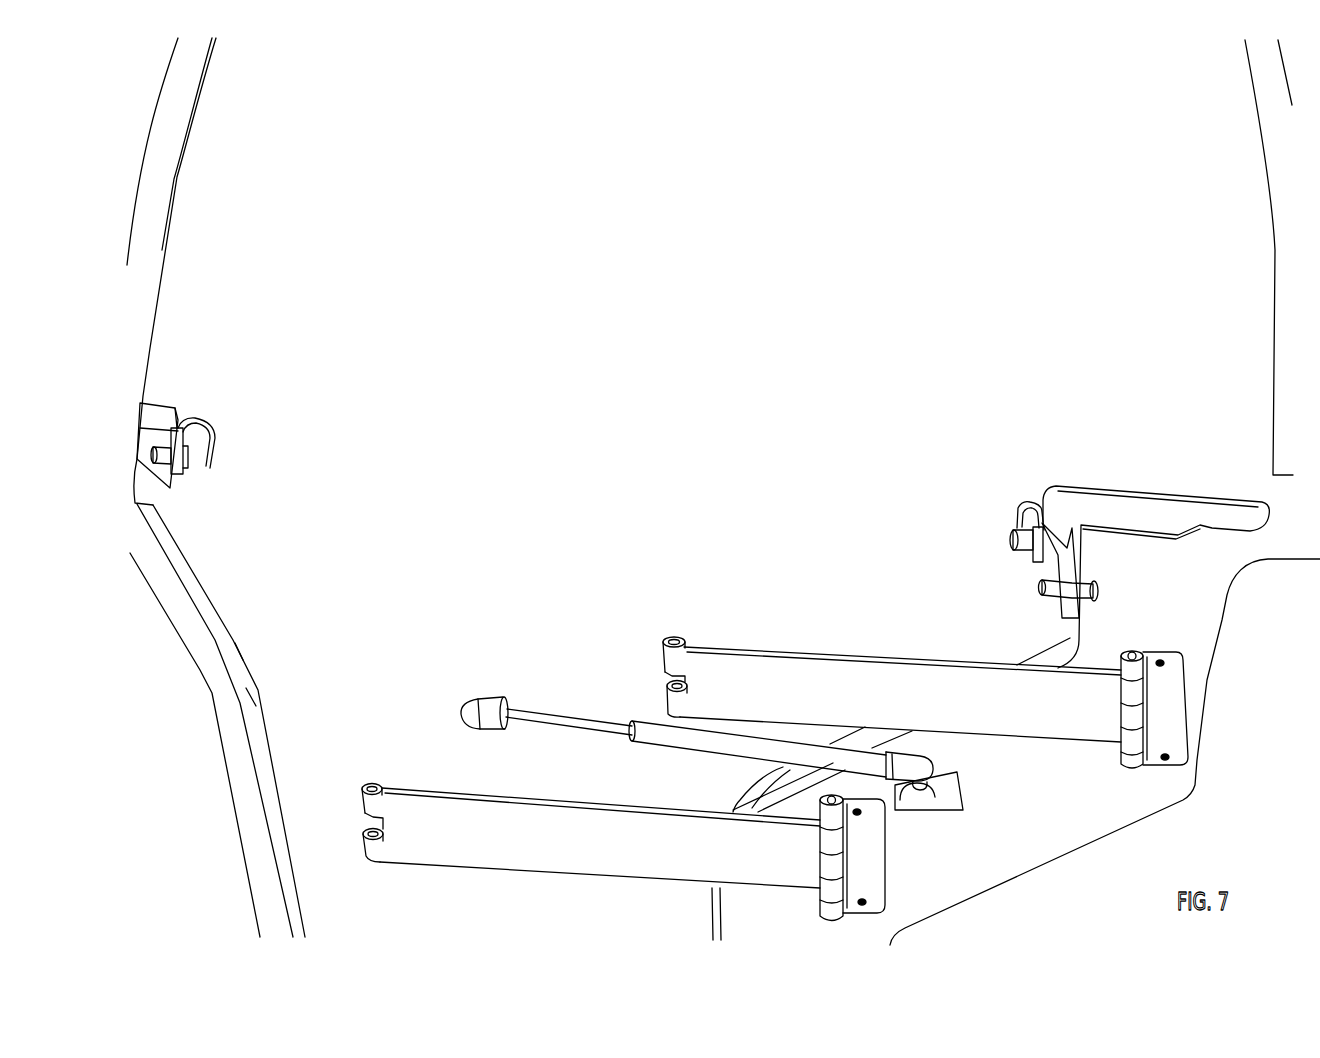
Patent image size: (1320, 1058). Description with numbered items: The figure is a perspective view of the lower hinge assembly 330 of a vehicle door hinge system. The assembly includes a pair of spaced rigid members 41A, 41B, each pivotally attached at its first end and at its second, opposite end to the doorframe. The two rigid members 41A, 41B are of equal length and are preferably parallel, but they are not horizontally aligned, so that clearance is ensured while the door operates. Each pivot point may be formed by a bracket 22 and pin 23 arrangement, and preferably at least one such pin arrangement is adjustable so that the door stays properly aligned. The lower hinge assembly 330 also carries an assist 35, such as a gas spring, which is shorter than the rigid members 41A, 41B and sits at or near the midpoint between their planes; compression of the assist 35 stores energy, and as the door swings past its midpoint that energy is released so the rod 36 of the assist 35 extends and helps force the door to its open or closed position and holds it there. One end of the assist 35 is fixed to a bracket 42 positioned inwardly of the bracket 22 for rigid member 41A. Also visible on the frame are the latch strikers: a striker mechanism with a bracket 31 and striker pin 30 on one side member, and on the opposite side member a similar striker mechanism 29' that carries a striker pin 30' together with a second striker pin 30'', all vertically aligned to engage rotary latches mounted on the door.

The lower hinge assembly 330 is at (697, 675).
The assist 35 is at (546, 737).
The rod 36 is at (592, 727).
The rigid member 41A is at (600, 857).
The rigid member 41B is at (900, 703).
The gas spring mounting bracket 42 is at (957, 800).
The bracket 22 is at (1170, 672).
The pin 23 is at (1131, 652).
The striker mechanism 29' is at (1050, 551).
The striker pin 30 is at (183, 460).
The striker pin 30' is at (1007, 557).
The second striker pin 30'' is at (1084, 581).
The bracket 31 is at (167, 413).